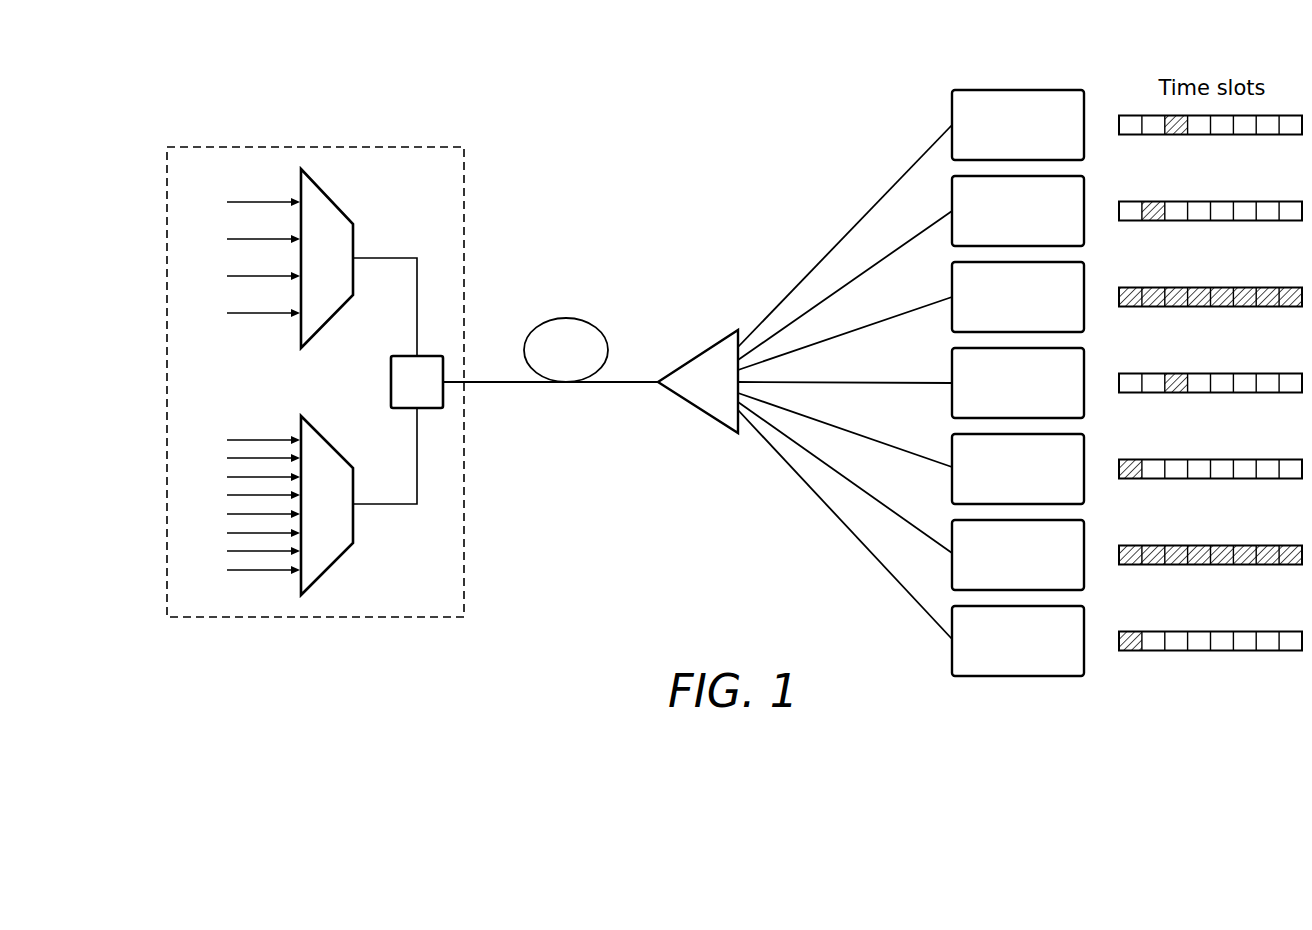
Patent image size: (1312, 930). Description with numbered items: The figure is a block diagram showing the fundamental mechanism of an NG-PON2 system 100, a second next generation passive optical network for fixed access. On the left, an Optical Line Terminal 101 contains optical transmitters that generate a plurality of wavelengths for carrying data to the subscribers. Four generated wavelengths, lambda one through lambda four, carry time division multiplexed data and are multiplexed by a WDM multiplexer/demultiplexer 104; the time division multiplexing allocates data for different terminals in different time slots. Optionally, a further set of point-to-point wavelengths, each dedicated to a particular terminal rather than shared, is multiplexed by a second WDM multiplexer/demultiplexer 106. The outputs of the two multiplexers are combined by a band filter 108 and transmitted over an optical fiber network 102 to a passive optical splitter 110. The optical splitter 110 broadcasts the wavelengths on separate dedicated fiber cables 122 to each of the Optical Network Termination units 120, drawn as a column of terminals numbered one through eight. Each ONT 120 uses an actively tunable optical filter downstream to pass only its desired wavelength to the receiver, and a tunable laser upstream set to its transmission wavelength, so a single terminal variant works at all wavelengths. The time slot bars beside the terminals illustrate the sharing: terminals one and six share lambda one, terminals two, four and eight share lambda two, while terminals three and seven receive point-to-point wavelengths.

The NG-PON2 system 100 is at (497, 90).
The Optical Line Terminal 101 is at (315, 382).
The optical fiber network 102 is at (566, 318).
The WDM multiplexer/demultiplexer 104 is at (333, 203).
The WDM multiplexer/demultiplexer 106 is at (333, 564).
The band filter 108 is at (391, 382).
The optical splitter 110 is at (707, 350).
The Optical Network Termination units 120 is at (1052, 90).
The dedicated fiber cables 122 is at (873, 208).